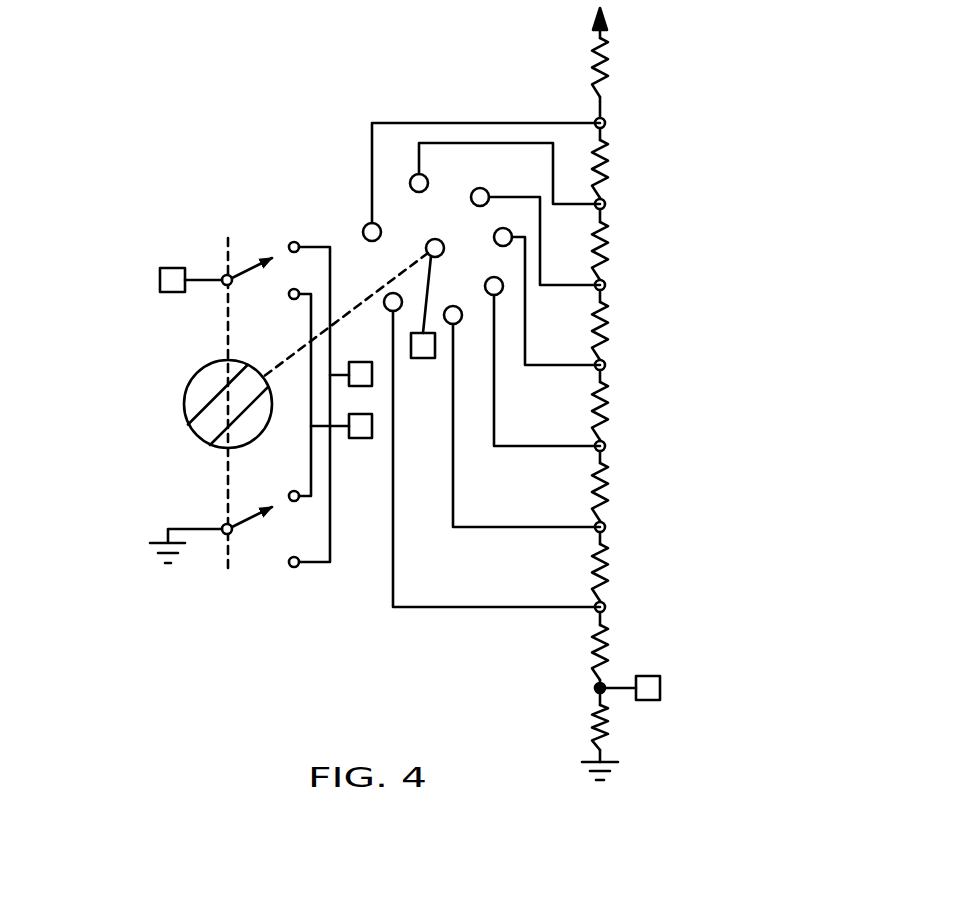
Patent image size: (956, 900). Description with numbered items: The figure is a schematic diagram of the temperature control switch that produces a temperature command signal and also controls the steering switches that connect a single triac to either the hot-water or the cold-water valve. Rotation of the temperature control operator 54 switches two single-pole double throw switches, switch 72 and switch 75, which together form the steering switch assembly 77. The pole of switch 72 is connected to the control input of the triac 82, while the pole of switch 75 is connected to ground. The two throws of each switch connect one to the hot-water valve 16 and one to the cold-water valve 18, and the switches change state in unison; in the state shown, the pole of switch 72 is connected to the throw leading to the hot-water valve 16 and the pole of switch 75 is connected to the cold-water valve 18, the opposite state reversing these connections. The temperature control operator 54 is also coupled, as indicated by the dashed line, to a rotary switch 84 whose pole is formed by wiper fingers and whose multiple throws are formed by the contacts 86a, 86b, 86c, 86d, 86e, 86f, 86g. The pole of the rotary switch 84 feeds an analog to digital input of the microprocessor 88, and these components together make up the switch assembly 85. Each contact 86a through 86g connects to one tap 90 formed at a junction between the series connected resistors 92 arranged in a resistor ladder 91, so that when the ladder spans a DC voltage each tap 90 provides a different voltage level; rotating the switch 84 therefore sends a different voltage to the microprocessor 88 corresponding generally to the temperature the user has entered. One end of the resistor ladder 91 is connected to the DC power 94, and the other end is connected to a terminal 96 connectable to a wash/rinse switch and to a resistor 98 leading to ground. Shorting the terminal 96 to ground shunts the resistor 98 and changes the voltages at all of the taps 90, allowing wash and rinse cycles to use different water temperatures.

The hot-water valve 16 is at (364, 360).
The cold-water valve 18 is at (355, 438).
The temperature control operator 54 is at (193, 375).
The single-pole double throw switch 72 is at (255, 240).
The single-pole double throw switch 75 is at (265, 540).
The steering switch assembly 77 is at (226, 389).
The triac 82 is at (173, 267).
The rotary switch 84 is at (460, 340).
The switch assembly 85 is at (343, 238).
The contact 86a is at (363, 229).
The contact 86b is at (412, 190).
The contact 86c is at (476, 189).
The contact 86d is at (503, 228).
The contact 86e is at (502, 290).
The contact 86f is at (453, 306).
The contact 86g is at (393, 293).
The microprocessor 88 is at (423, 358).
The tap 90 is at (606, 119).
The resistor ladder 91 is at (716, 146).
The resistor 92 is at (606, 64).
The DC power 94 is at (606, 22).
The terminal 96 is at (660, 688).
The resistor 98 is at (607, 732).